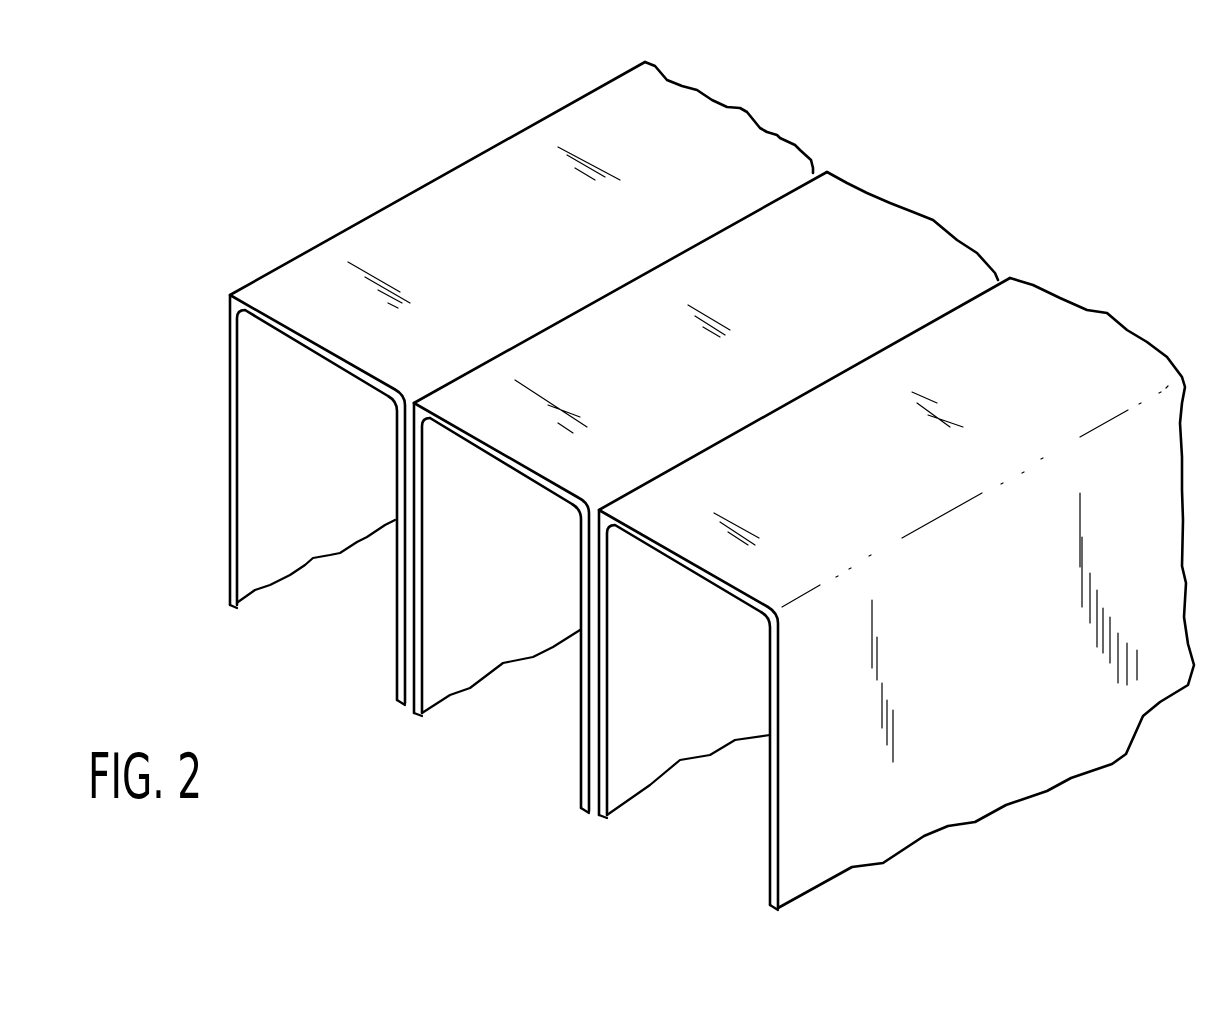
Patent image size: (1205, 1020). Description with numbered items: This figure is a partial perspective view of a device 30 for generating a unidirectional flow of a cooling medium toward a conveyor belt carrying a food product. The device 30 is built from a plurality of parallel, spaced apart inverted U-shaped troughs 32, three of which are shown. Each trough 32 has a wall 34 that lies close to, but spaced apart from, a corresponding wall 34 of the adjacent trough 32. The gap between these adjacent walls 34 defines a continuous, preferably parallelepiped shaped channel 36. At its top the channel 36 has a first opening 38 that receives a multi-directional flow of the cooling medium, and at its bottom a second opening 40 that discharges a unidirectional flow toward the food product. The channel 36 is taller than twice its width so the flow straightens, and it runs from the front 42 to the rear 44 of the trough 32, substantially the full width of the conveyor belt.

The device 30 is at (403, 156).
The inverted U-shaped trough 32 is at (366, 220).
The wall 34 is at (398, 437).
The channel 36 is at (408, 573).
The first opening 38 is at (410, 402).
The second opening 40 is at (470, 738).
The front 42 is at (600, 518).
The rear 44 is at (999, 276).